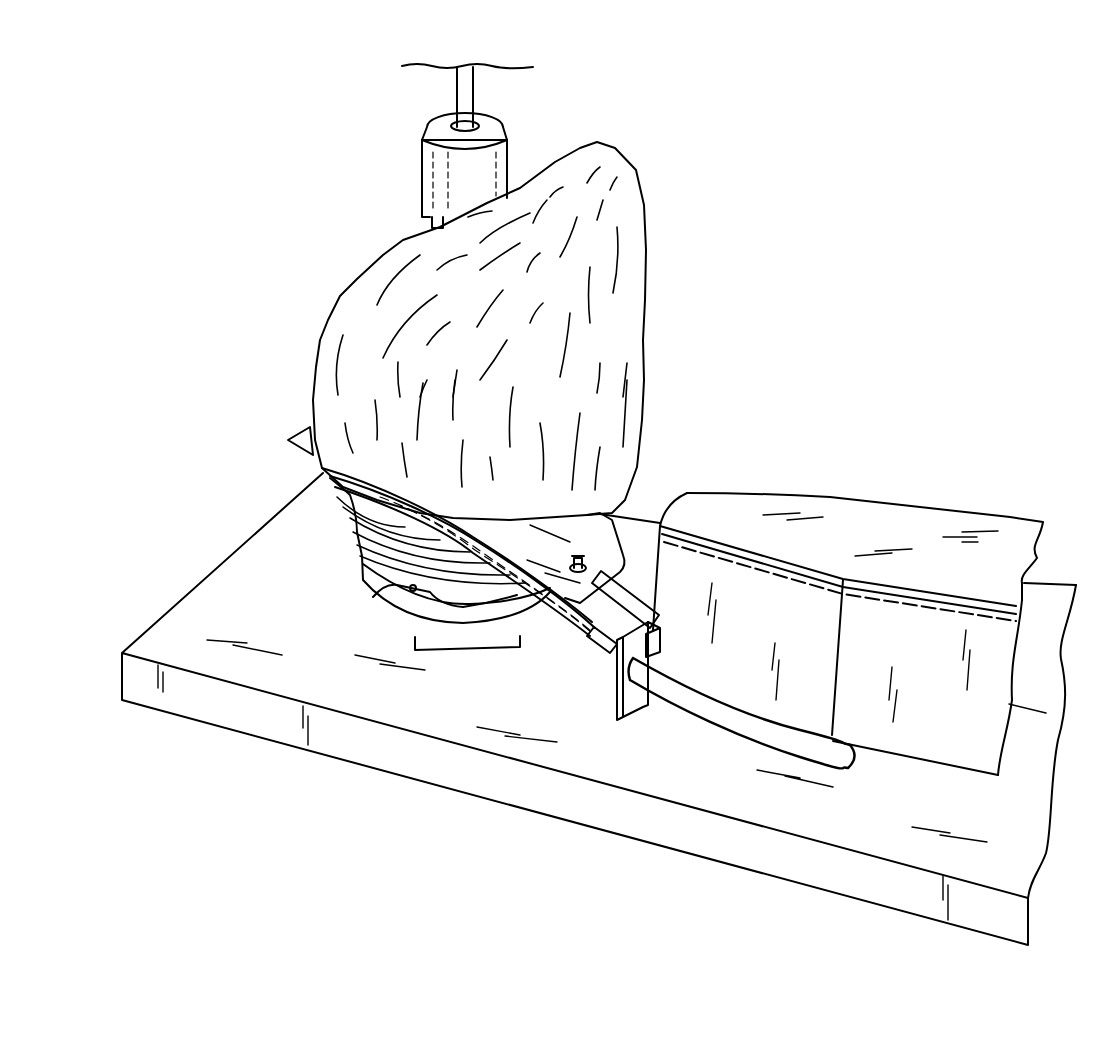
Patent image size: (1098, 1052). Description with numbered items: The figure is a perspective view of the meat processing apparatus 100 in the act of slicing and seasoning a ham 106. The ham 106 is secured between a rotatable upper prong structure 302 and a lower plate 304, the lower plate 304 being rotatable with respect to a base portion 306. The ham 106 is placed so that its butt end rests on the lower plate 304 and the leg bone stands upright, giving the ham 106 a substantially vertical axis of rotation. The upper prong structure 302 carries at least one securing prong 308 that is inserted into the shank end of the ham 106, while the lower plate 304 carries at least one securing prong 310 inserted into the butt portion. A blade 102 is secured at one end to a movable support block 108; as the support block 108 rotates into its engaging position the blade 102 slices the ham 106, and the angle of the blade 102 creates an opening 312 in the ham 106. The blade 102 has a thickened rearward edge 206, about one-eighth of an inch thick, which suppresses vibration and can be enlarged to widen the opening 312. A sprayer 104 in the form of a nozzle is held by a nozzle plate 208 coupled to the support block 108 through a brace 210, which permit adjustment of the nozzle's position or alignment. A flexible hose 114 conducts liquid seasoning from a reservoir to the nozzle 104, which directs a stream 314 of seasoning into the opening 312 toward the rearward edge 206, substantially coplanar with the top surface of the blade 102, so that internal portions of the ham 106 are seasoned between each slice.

The meat processing apparatus 100 is at (852, 305).
The blade 102 is at (313, 432).
The sprayer 104 is at (596, 645).
The ham 106 is at (362, 316).
The movable support block 108 is at (898, 523).
The flexible hose 114 is at (750, 733).
The rearward edge 206 is at (490, 542).
The nozzle plate 208 is at (637, 712).
The brace 210 is at (658, 645).
The upper prong structure 302 is at (427, 178).
The lower plate 304 is at (430, 603).
The base portion 306 is at (247, 713).
The securing prong 308 is at (432, 222).
The securing prong 310 is at (373, 597).
The opening 312 is at (340, 500).
The stream 314 is at (563, 608).